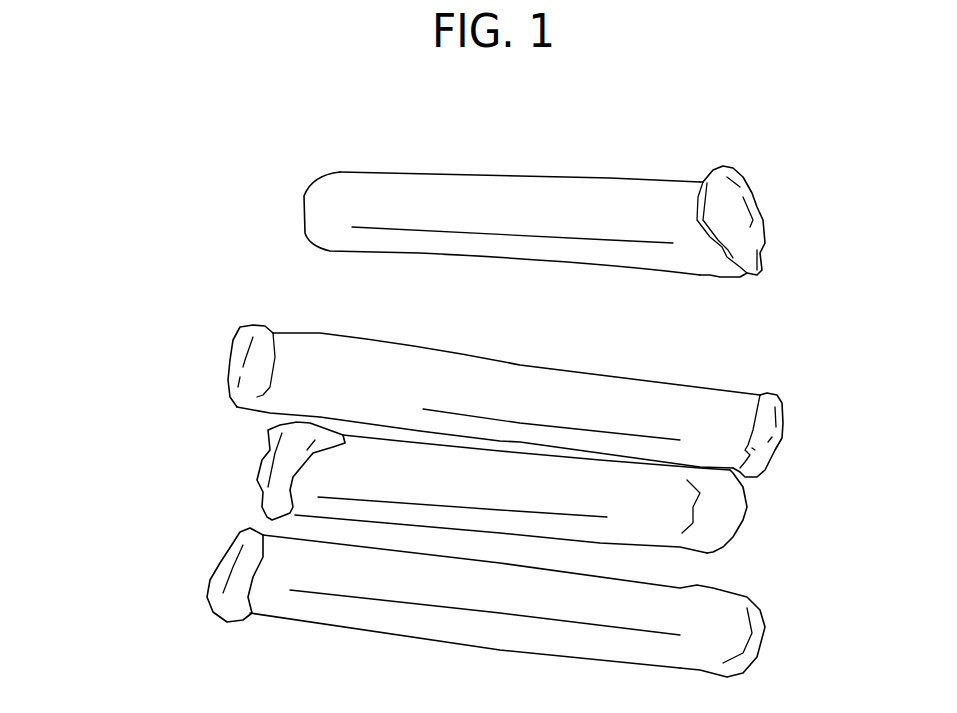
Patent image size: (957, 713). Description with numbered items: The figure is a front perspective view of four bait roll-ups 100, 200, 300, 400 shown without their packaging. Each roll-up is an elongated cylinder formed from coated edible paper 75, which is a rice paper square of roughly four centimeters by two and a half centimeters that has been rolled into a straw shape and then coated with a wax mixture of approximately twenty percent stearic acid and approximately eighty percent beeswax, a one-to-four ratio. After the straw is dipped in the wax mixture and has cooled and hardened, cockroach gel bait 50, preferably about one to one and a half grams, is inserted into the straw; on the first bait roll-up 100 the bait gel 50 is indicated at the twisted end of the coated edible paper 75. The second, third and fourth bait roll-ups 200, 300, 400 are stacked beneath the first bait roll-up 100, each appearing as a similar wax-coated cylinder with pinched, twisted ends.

The first bait roll-up 100 is at (205, 170).
The second bait roll-up 200 is at (205, 310).
The third bait roll-up 300 is at (205, 437).
The fourth bait roll-up 400 is at (205, 560).
The edible rice paper 75 is at (464, 173).
The bait gel 50 is at (733, 203).